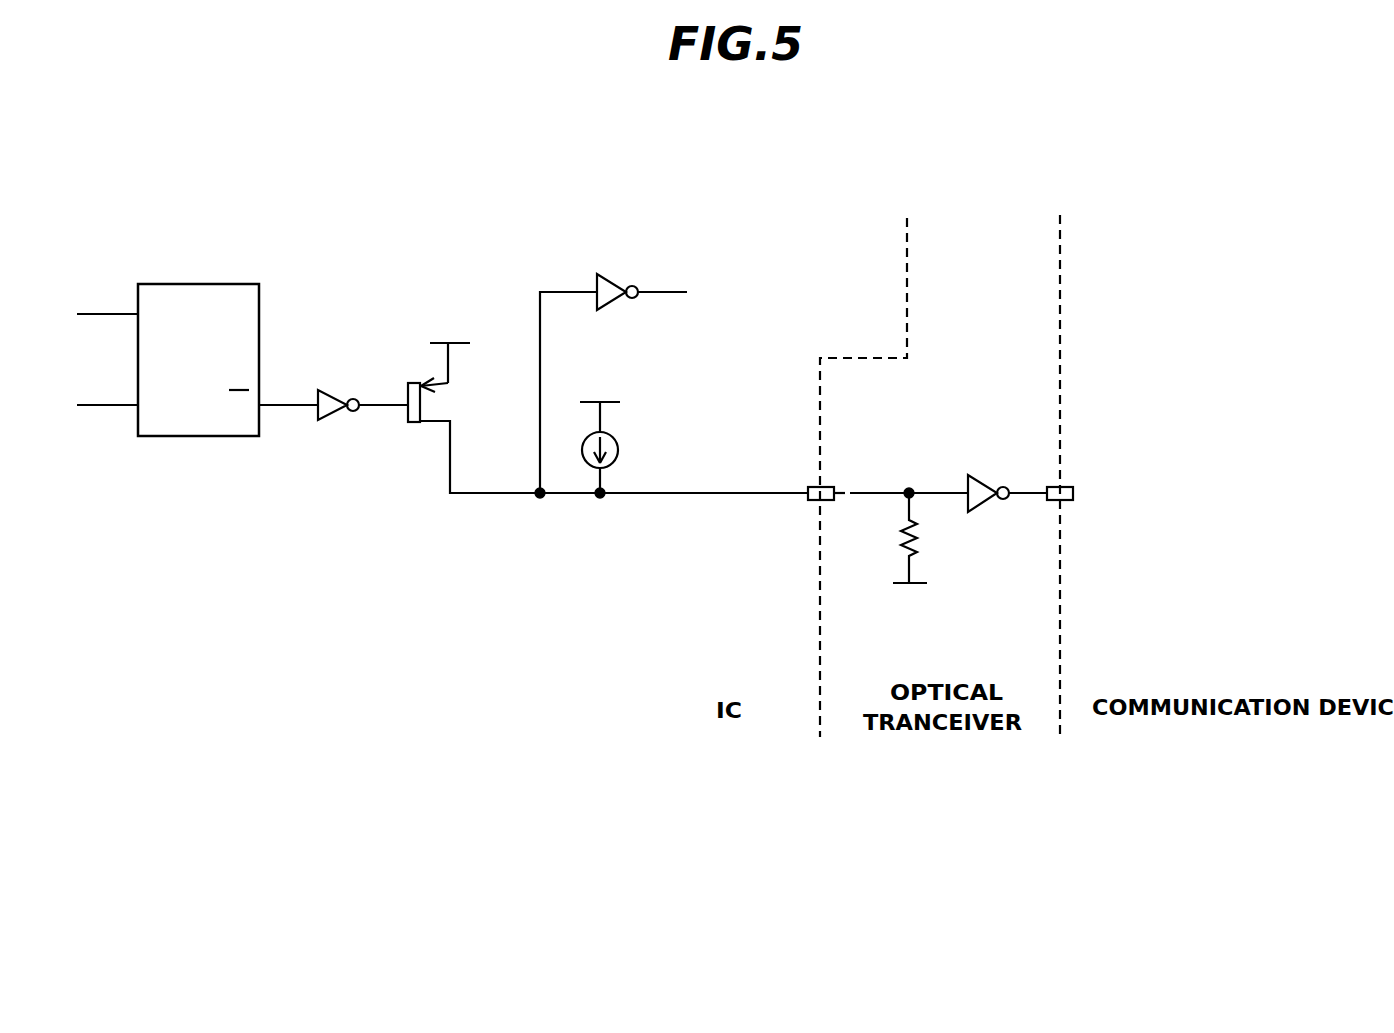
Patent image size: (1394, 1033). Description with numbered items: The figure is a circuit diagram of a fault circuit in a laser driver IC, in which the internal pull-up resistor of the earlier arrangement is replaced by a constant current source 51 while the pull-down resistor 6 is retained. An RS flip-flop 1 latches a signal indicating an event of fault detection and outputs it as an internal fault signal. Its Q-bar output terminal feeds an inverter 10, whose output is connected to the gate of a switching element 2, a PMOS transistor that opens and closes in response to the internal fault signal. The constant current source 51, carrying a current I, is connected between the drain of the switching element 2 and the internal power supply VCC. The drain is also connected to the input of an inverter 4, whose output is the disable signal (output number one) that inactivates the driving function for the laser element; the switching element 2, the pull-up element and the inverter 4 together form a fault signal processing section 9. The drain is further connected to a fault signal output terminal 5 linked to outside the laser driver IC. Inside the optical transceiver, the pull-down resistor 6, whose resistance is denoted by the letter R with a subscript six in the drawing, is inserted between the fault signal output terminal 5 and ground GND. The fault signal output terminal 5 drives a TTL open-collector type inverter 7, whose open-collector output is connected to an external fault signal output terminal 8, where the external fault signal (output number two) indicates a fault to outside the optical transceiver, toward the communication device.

The fault signal processing section 9 is at (241, 224).
The RS flip-flop 1 is at (195, 436).
The inverter 10 is at (333, 417).
The switching element 2 is at (408, 388).
The inverter 4 is at (612, 273).
The constant current source 51 is at (708, 460).
The fault signal output terminal 5 is at (808, 498).
The pull-down resistor 6 is at (920, 537).
The inverter 7 is at (981, 475).
The external fault signal output terminal 8 is at (1065, 485).